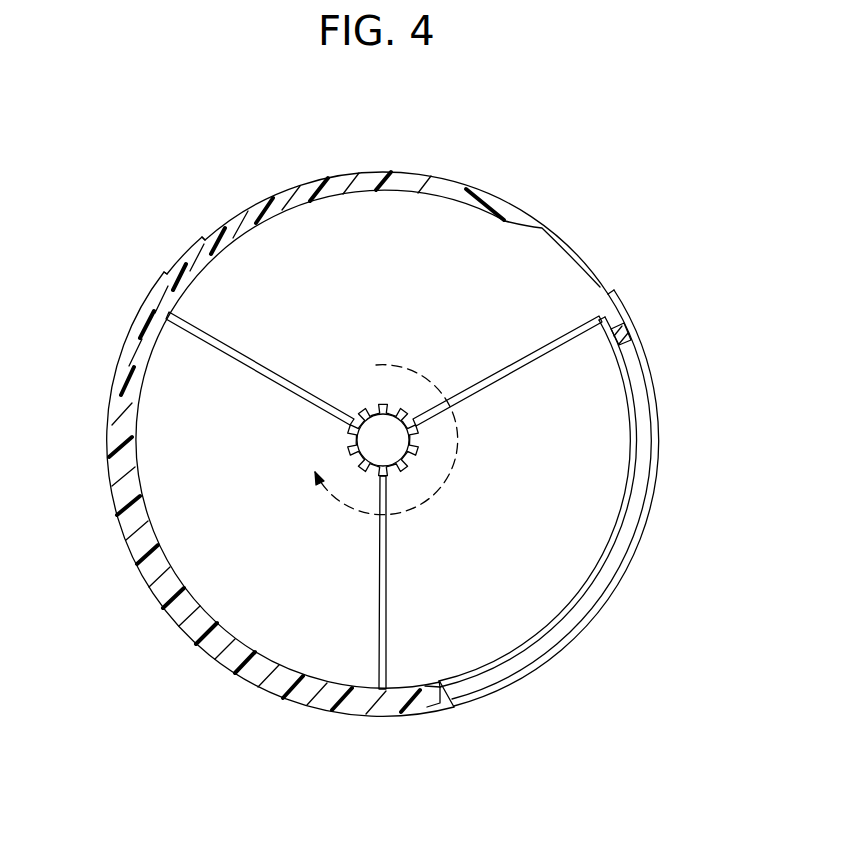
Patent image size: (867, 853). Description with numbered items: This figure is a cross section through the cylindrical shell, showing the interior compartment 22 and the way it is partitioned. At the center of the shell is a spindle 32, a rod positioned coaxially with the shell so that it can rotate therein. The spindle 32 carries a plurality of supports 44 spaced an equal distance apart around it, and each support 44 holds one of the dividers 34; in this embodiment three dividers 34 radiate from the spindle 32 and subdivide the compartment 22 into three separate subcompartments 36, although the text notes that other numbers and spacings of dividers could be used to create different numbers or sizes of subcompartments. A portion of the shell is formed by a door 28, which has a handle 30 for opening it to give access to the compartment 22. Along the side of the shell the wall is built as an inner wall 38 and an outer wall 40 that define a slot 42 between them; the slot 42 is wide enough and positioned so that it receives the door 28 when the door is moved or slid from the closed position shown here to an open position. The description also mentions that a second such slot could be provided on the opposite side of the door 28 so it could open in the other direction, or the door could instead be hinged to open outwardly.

The compartment 22 is at (183, 636).
The door 28 is at (442, 185).
The handle 30 is at (180, 275).
The spindle 32 is at (348, 452).
The dividers 34 is at (232, 358).
The subcompartments 36 is at (411, 299).
The inner wall 38 is at (412, 687).
The outer wall 40 is at (572, 647).
The slot 42 is at (633, 517).
The supports 44 is at (377, 413).